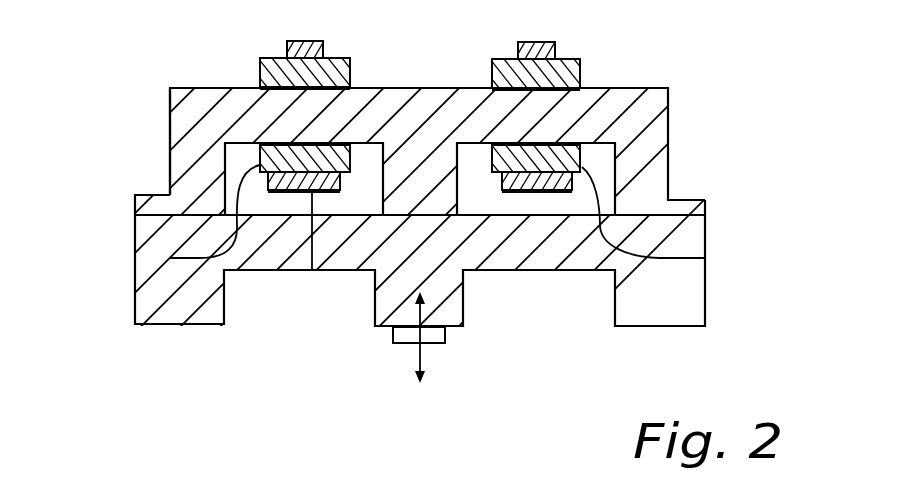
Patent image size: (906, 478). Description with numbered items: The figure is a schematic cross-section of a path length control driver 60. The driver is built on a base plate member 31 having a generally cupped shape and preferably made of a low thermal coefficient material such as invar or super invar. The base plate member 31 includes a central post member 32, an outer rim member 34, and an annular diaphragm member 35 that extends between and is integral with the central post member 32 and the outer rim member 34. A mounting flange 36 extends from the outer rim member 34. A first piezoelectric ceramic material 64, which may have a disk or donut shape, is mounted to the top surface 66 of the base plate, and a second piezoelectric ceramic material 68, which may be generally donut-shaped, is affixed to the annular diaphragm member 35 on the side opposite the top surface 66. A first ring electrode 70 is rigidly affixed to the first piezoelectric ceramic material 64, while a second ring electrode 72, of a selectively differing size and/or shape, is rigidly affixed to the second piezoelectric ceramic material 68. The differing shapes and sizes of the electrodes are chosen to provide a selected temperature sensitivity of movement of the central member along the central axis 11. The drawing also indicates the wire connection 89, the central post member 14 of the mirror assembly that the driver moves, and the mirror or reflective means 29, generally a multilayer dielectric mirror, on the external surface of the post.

The path length control driver 60 is at (118, 101).
The base plate member 31 is at (678, 122).
The annular diaphragm member 35 is at (602, 113).
The mounting flange 36 is at (152, 195).
The top surface 66 is at (170, 88).
The central post member 32 is at (434, 173).
The outer rim member 34 is at (655, 173).
The first ring electrode 70 is at (323, 44).
The first piezoelectric ceramic material 64 is at (492, 72).
The second ring electrode 72 is at (312, 270).
The bond wire 89 is at (170, 258).
The second piezoelectric ceramic material 68 is at (705, 258).
The mirror or reflective means 29 is at (440, 344).
The central axis 11 is at (411, 347).
The central post member 14 is at (434, 285).